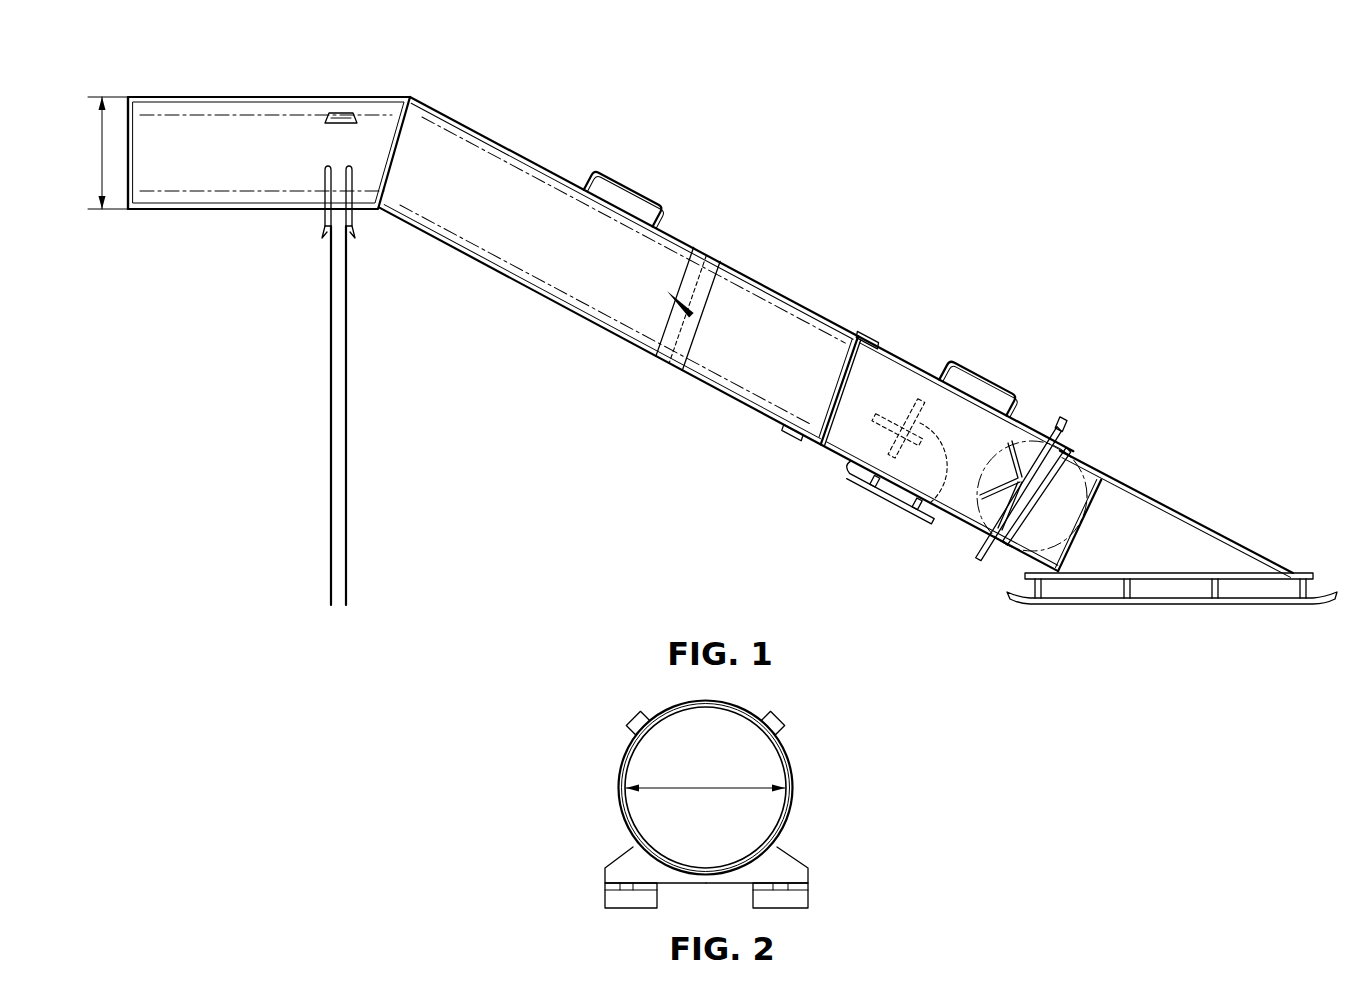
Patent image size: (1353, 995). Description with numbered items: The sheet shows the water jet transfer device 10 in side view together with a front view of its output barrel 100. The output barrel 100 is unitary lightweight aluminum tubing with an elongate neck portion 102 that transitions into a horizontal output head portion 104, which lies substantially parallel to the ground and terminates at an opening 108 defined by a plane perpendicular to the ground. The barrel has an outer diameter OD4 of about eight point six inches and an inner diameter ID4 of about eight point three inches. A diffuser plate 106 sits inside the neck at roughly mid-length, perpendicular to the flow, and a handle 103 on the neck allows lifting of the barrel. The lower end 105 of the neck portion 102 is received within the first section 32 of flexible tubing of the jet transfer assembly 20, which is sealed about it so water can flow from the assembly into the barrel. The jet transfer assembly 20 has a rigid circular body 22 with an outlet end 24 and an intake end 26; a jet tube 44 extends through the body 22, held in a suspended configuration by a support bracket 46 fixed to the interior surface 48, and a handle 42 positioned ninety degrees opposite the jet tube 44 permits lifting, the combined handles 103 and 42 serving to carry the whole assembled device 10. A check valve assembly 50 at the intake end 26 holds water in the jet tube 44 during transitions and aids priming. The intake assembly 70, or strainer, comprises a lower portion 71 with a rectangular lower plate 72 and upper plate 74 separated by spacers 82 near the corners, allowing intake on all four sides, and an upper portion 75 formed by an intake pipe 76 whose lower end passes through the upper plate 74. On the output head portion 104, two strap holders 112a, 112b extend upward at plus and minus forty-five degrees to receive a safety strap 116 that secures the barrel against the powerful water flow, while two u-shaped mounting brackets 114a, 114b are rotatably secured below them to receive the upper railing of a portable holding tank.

In FIG. 1, the water jet transfer device 10 is at (1130, 240).
In FIG. 1, the output barrel 100 is at (540, 103).
In FIG. 1, the output head portion 104 is at (214, 97).
In FIG. 2, the output head portion 104 is at (792, 768).
In FIG. 1, the elongate neck portion 102 is at (528, 258).
In FIG. 1, the opening 108 is at (124, 152).
In FIG. 2, the opening 108 is at (685, 835).
In FIG. 1, the strap holder 112a is at (343, 113).
In FIG. 2, the strap holder 112a is at (780, 722).
In FIG. 2, the strap holder 112b is at (645, 718).
In FIG. 2, the u-shaped mounting bracket 114a is at (800, 895).
In FIG. 2, the u-shaped mounting bracket 114b is at (610, 895).
In FIG. 1, the safety strap 116 is at (348, 505).
In FIG. 1, the handle 103 is at (650, 193).
In FIG. 1, the diffuser plate 106 is at (662, 352).
In FIG. 1, the lower end 105 is at (872, 349).
In FIG. 1, the jet transfer assembly 20 is at (1068, 398).
In FIG. 1, the body 22 is at (835, 443).
In FIG. 1, the outlet end 24 is at (885, 362).
In FIG. 1, the intake end 26 is at (1098, 482).
In FIG. 1, the first section of flexible tubing 32 is at (1030, 578).
In FIG. 1, the handle 42 is at (1000, 375).
In FIG. 1, the jet tube 44 is at (945, 440).
In FIG. 1, the support bracket 46 is at (912, 515).
In FIG. 1, the interior surface 48 is at (924, 405).
In FIG. 1, the check valve assembly 50 is at (1078, 450).
In FIG. 1, the intake assembly 70 is at (1283, 505).
In FIG. 1, the lower portion 71 is at (1170, 505).
In FIG. 1, the intake pipe 76 is at (1176, 517).
In FIG. 1, the upper plate 74 is at (1302, 573).
In FIG. 1, the upper portion 75 is at (1100, 625).
In FIG. 1, the lower plate 72 is at (1262, 604).
In FIG. 1, the spacers 82 is at (1213, 604).
In FIG. 1, the outer diameter OD4 is at (92, 153).
In FIG. 2, the inner diameter ID4 is at (705, 778).